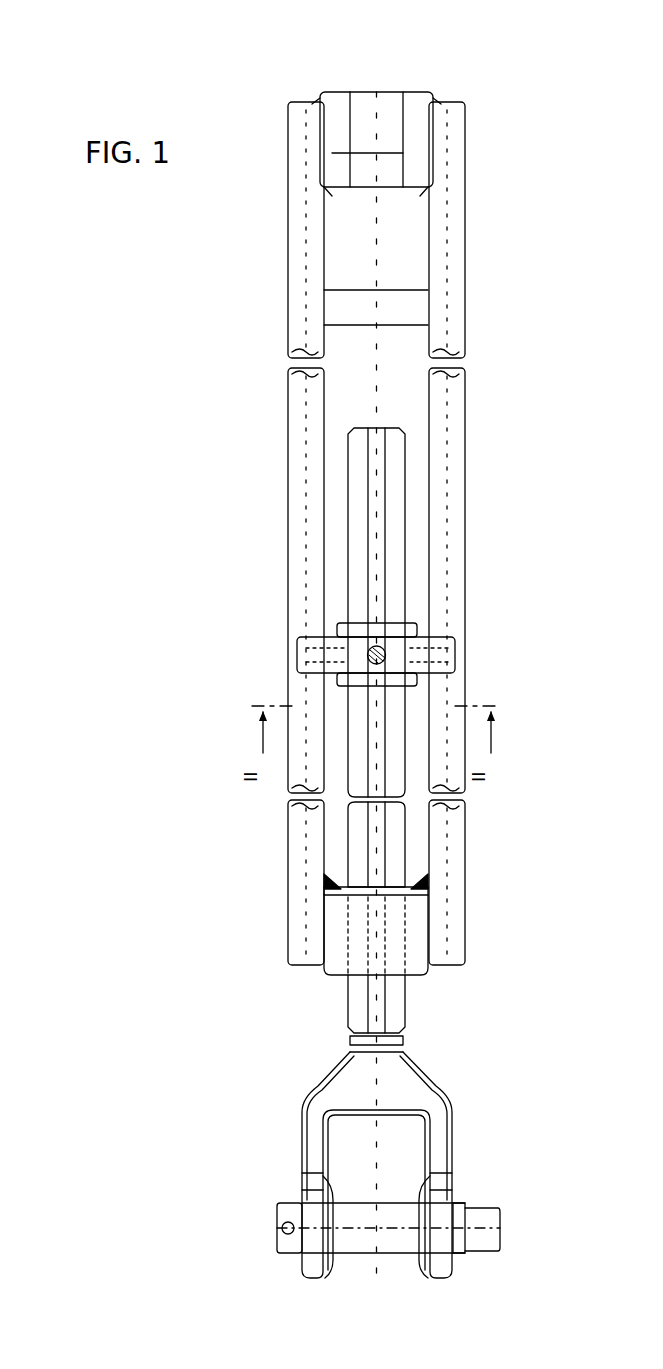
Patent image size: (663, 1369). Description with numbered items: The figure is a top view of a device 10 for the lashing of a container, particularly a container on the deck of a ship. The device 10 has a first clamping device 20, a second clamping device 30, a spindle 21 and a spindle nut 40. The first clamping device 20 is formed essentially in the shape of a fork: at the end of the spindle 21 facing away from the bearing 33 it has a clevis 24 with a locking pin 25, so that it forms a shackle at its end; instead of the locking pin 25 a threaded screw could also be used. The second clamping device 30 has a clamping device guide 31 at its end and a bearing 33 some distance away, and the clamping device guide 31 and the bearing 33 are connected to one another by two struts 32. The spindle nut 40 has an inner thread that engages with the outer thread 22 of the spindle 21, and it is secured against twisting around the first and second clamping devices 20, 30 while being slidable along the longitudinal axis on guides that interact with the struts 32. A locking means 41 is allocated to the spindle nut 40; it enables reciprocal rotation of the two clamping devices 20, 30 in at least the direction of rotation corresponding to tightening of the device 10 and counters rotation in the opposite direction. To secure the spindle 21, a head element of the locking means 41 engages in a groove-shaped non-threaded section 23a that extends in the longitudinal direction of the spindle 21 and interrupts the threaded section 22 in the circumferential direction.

The device 10 is at (155, 777).
The first clamping device 20 is at (400, 1155).
The spindle 21 is at (370, 426).
The outer thread 22 is at (382, 1004).
The non-threaded section 23a is at (378, 1005).
The clevis 24 is at (310, 1117).
The locking pin 25 is at (490, 1213).
The second clamping device 30 is at (210, 531).
The clamping device guide 31 is at (417, 930).
The struts 32 is at (298, 397).
The bearing 33 is at (397, 96).
The spindle nut 40 is at (355, 654).
The locking means 41 is at (385, 655).